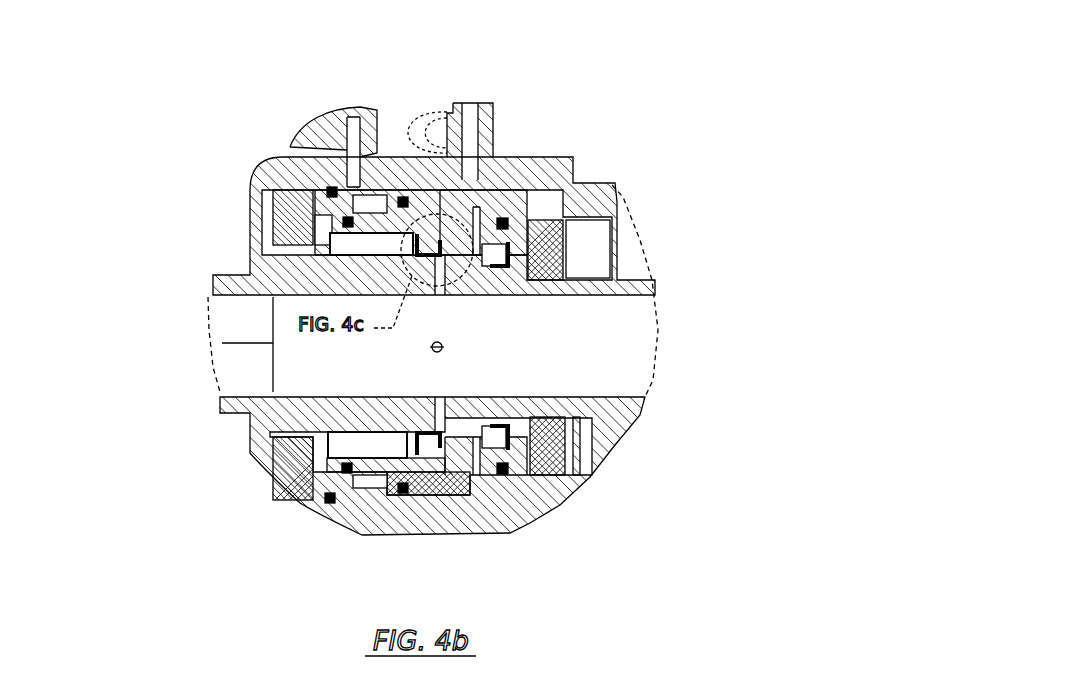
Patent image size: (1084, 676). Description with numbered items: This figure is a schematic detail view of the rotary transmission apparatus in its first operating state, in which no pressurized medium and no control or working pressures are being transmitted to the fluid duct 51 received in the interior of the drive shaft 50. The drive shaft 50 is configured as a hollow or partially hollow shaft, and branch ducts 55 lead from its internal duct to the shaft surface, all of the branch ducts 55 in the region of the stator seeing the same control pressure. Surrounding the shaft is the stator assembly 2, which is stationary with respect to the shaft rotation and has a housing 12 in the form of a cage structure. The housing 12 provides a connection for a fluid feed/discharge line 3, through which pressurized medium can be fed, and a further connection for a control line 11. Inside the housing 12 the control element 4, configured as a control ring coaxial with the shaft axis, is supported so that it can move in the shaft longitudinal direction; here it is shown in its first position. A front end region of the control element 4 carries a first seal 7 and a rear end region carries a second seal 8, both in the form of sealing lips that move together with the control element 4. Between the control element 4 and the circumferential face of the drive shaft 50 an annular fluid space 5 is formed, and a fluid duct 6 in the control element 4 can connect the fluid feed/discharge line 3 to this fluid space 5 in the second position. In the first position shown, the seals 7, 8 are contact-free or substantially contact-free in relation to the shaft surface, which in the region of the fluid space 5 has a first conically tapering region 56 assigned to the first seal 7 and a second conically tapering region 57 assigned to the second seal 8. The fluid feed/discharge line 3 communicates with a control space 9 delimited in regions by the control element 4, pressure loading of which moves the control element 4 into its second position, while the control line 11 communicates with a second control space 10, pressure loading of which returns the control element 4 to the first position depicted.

The stator assembly 2 is at (605, 102).
The fluid feed/discharge line 3 is at (468, 145).
The control element 4 is at (474, 205).
The fluid space 5 is at (440, 254).
The fluid duct 6 is at (478, 222).
The first seal 7 is at (507, 253).
The second seal 8 is at (420, 252).
The control space 9 is at (475, 215).
The second control space 10 is at (372, 210).
The control line 11 is at (354, 158).
The housing 12 is at (297, 176).
The drive shaft 50 is at (640, 290).
The fluid duct 51 is at (637, 350).
The branch ducts 55 is at (430, 282).
The first conically tapering region 56 is at (502, 427).
The second conically tapering region 57 is at (422, 426).